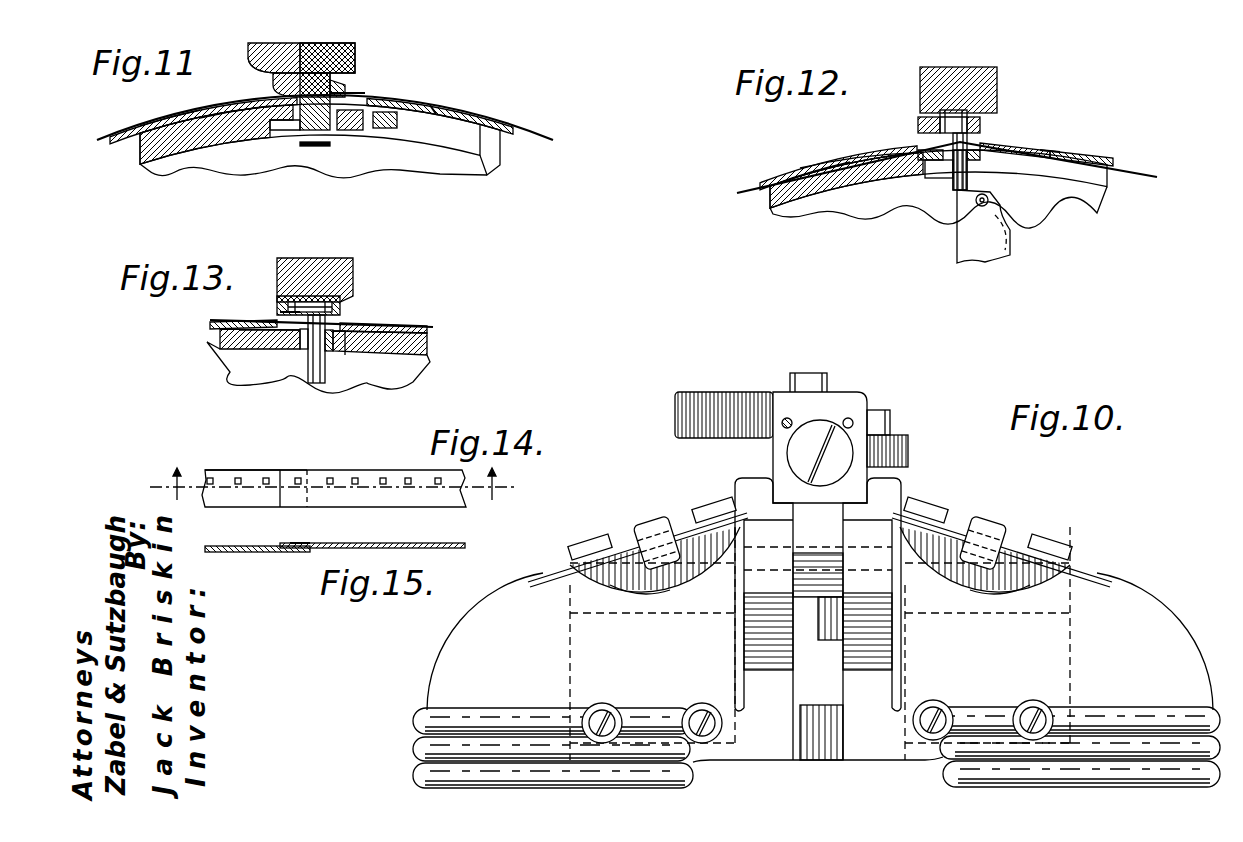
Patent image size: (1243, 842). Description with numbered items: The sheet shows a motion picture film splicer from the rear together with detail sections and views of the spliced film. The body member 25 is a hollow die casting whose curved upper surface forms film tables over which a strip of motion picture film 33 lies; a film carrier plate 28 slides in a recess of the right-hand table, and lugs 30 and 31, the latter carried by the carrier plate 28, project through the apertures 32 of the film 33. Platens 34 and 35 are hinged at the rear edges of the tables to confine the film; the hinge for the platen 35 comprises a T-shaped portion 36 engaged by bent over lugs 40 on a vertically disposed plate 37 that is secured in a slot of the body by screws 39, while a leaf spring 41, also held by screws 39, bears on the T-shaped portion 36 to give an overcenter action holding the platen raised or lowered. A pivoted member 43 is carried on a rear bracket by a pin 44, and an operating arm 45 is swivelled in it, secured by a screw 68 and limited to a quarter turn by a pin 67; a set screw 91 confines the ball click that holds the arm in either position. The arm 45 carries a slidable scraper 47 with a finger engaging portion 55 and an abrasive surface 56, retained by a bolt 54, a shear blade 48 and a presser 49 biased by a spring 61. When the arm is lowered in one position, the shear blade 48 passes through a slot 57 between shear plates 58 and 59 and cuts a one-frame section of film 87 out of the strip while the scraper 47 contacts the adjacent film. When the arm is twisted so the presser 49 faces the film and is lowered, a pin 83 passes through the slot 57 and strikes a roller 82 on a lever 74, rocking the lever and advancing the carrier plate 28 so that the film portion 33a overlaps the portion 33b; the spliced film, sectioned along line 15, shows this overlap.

In FIG. 14, the section line 15— 15 is at (335, 485).
In FIG. 11, the body member 25 is at (175, 140).
In FIG. 12, the body member 25 is at (770, 205).
In FIG. 13, the body member 25 is at (225, 345).
In FIG. 10, the body member 25 is at (470, 656).
In FIG. 11, the film carrier plate 28 is at (440, 140).
In FIG. 11, the lugs 30 is at (150, 125).
In FIG. 12, the lugs 30 is at (790, 170).
In FIG. 11, the lugs 31 is at (430, 135).
In FIG. 12, the lugs 31 is at (1080, 145).
In FIG. 14, the apertures 32 is at (405, 478).
In FIG. 11, the strip of motion picture film 33 is at (553, 142).
In FIG. 12, the strip of motion picture film 33 is at (1157, 177).
In FIG. 13, the strip of motion picture film 33 is at (428, 325).
In FIG. 14, the strip of motion picture film 33 is at (338, 476).
In FIG. 15, the strip of motion picture film 33 is at (452, 549).
In FIG. 11, the portion of the film 33a is at (348, 87).
In FIG. 12, the portion of the film 33a is at (975, 150).
In FIG. 13, the portion of the film 33a is at (290, 300).
In FIG. 14, the portion of the film 33a is at (303, 444).
In FIG. 15, the portion of the film 33a is at (297, 546).
In FIG. 12, the portion of the film 33b is at (940, 150).
In FIG. 14, the portion of the film 33b is at (275, 470).
In FIG. 15, the portion of the film 33b is at (285, 551).
In FIG. 11, the platen 34 is at (120, 133).
In FIG. 12, the platen 34 is at (772, 180).
In FIG. 13, the platen 34 is at (215, 322).
In FIG. 10, the platen 34 is at (1090, 575).
In FIG. 11, the platen 35 is at (480, 122).
In FIG. 12, the platen 35 is at (1105, 165).
In FIG. 10, the platen 35 is at (548, 574).
In FIG. 10, the T-shaped portion 36 is at (580, 560).
In FIG. 10, the vertically disposed plate 37 is at (630, 592).
In FIG. 10, the screws 39 is at (700, 706).
In FIG. 10, the bent over lugs 40 is at (595, 542).
In FIG. 10, the leaf spring 41 is at (660, 520).
In FIG. 10, the pivoted member 43 is at (810, 600).
In FIG. 10, the pin 44 is at (720, 577).
In FIG. 11, the operating arm 45 is at (345, 50).
In FIG. 12, the operating arm 45 is at (998, 82).
In FIG. 13, the operating arm 45 is at (355, 270).
In FIG. 11, the slidable scraper 47 is at (262, 58).
In FIG. 10, the slidable scraper 47 is at (738, 382).
In FIG. 11, the shear blade 48 is at (345, 85).
In FIG. 10, the shear blade 48 is at (895, 458).
In FIG. 12, the presser 49 is at (918, 122).
In FIG. 13, the presser 49 is at (277, 310).
In FIG. 10, the bolt 54 is at (820, 373).
In FIG. 10, the finger engaging portion 55 is at (676, 422).
In FIG. 11, the abrasive surface 56 is at (285, 97).
In FIG. 10, the abrasive surface 56 is at (892, 424).
In FIG. 11, the slot 57 is at (335, 125).
In FIG. 12, the slot 57 is at (950, 178).
In FIG. 13, the slot 57 is at (300, 345).
In FIG. 11, the shear plate 58 is at (240, 135).
In FIG. 12, the shear plate 58 is at (930, 170).
In FIG. 13, the shear plate 58 is at (265, 355).
In FIG. 11, the shear plate 59 is at (335, 97).
In FIG. 12, the shear plate 59 is at (970, 160).
In FIG. 13, the shear plate 59 is at (345, 332).
In FIG. 12, the spring 61 is at (982, 108).
In FIG. 13, the spring 61 is at (328, 305).
In FIG. 10, the pin 67 is at (852, 420).
In FIG. 10, the screw 68 is at (792, 452).
In FIG. 12, the lever 74 is at (1005, 258).
In FIG. 12, the roller 82 is at (1015, 245).
In FIG. 12, the pin 83 is at (957, 200).
In FIG. 13, the pin 83 is at (315, 370).
In FIG. 11, the section of film 87 is at (310, 148).
In FIG. 10, the set screw 91 is at (787, 418).